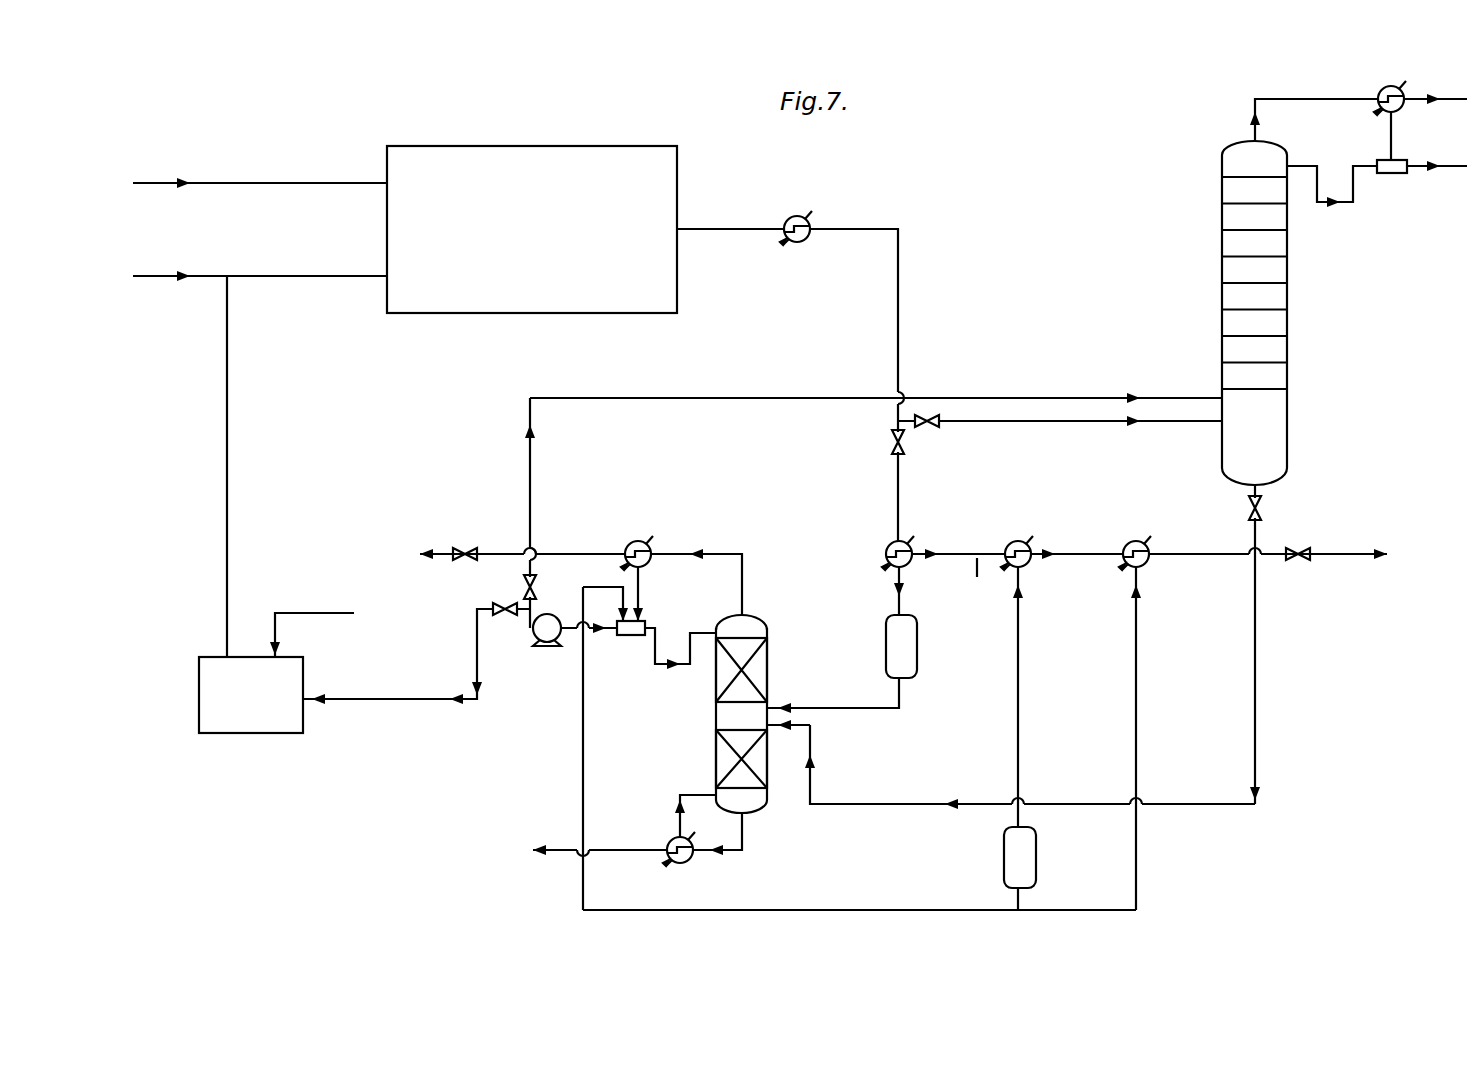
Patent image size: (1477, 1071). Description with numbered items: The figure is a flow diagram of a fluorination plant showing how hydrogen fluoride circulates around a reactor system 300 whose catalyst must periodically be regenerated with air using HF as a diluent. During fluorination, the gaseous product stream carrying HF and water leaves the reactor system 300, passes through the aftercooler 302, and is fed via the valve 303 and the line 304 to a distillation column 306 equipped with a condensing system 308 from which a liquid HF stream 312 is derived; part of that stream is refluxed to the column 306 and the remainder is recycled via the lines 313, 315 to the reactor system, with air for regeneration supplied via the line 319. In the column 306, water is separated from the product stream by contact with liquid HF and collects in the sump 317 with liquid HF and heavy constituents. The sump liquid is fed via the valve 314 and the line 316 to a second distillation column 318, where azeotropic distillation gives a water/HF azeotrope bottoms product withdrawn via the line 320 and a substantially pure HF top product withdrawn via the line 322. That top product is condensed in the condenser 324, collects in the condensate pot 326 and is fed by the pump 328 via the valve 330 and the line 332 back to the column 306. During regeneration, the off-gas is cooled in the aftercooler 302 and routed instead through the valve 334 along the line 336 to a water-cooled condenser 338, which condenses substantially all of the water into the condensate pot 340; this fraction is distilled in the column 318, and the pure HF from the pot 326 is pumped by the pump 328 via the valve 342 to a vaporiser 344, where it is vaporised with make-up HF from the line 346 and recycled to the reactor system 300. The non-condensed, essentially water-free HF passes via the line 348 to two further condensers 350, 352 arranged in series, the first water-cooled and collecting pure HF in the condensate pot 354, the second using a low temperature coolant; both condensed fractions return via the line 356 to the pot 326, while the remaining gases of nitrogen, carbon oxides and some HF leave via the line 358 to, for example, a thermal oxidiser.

The reactor system 300 is at (548, 244).
The aftercooler 302 is at (802, 214).
The valve 303 is at (931, 427).
The line 304 is at (1111, 424).
The distillation column 306 is at (1290, 353).
The condensing system 308 is at (1355, 86).
The liquid HF stream 312 is at (1393, 140).
The line 313 is at (1456, 168).
The valve 314 is at (1263, 510).
The line 315 is at (172, 276).
The line 316 is at (1262, 660).
The sump 317 is at (1273, 465).
The distillation column 318 is at (782, 680).
The line 319 is at (249, 183).
The line 320 is at (570, 853).
The line 322 is at (703, 552).
The condenser 324 is at (638, 540).
The condensate pot 326 is at (643, 624).
The pump 328 is at (533, 640).
The valve 330 is at (532, 578).
The line 332 is at (748, 400).
The valve 334 is at (890, 440).
The line 336 is at (901, 521).
The condenser 338 is at (888, 545).
The condensate pot 340 is at (910, 653).
The valve 342 is at (503, 605).
The vaporiser 344 is at (305, 672).
The line 346 is at (318, 612).
The line 348 is at (978, 588).
The condenser 350 is at (1012, 538).
The condenser 352 is at (1133, 537).
The condensate pot 354 is at (1037, 860).
The line 356 is at (800, 906).
The line 358 is at (1328, 558).